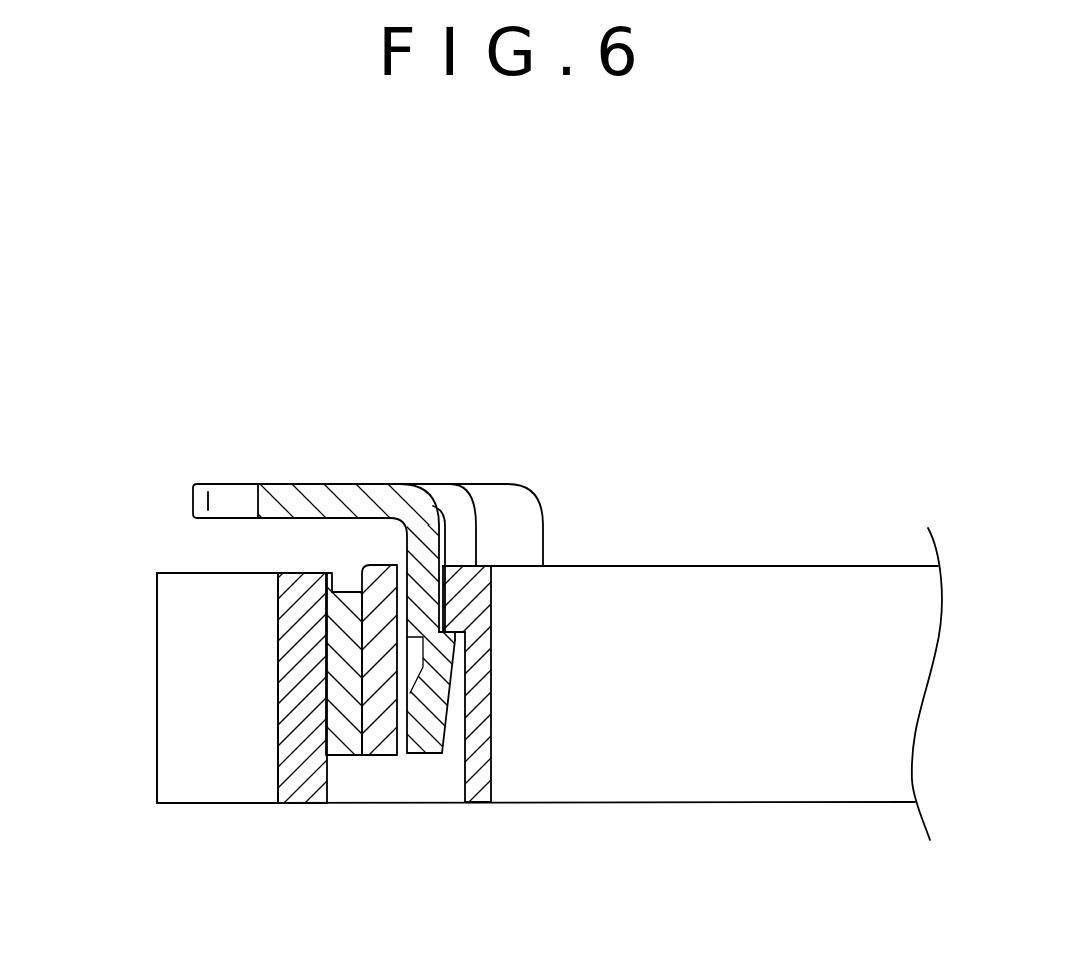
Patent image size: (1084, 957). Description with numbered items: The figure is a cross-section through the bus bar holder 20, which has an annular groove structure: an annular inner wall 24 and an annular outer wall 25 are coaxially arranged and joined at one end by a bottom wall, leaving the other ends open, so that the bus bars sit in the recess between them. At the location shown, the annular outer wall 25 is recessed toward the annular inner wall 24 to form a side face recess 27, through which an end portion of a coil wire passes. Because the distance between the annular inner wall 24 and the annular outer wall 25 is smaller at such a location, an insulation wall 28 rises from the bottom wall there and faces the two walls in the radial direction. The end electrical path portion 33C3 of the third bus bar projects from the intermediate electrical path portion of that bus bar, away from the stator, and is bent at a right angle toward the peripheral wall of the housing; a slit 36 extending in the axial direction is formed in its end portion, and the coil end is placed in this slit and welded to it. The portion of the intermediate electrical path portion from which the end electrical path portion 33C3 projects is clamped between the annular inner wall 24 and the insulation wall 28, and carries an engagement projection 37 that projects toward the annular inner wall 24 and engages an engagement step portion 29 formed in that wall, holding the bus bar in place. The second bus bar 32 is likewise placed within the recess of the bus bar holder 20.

The bus bar holder 20 is at (769, 556).
The annular inner wall 24 is at (489, 804).
The annular outer wall 25 is at (300, 788).
The side face recess 27 is at (215, 790).
The insulation wall 28 is at (380, 733).
The engagement step portion 29 is at (455, 622).
The second bus bar 32 is at (316, 653).
The end electrical path portion 33C3 is at (344, 470).
The slit 36 is at (230, 497).
The engagement projection 37 is at (447, 651).